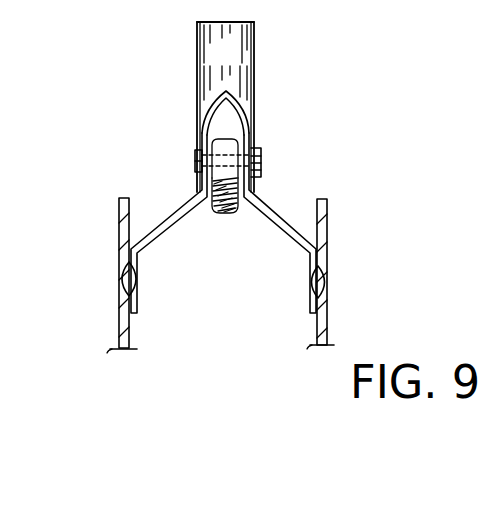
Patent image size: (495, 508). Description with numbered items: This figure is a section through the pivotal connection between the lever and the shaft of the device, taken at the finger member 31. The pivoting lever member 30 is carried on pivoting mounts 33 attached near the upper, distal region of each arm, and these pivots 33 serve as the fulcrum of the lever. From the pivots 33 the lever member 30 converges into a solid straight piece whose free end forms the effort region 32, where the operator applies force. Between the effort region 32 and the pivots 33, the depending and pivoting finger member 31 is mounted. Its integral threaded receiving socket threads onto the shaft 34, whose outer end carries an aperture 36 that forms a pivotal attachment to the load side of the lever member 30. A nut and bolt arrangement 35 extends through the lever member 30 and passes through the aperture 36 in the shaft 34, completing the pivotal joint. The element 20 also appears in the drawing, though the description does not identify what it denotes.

The fence post 20 is at (121, 318).
The bracket assembly 30 is at (262, 111).
The threaded end of bolt 31 is at (230, 211).
The tubular support member 32 is at (243, 56).
The weld 33 is at (117, 278).
The strap 34 is at (236, 148).
The nut 35 is at (259, 164).
The bolt 36 is at (222, 153).